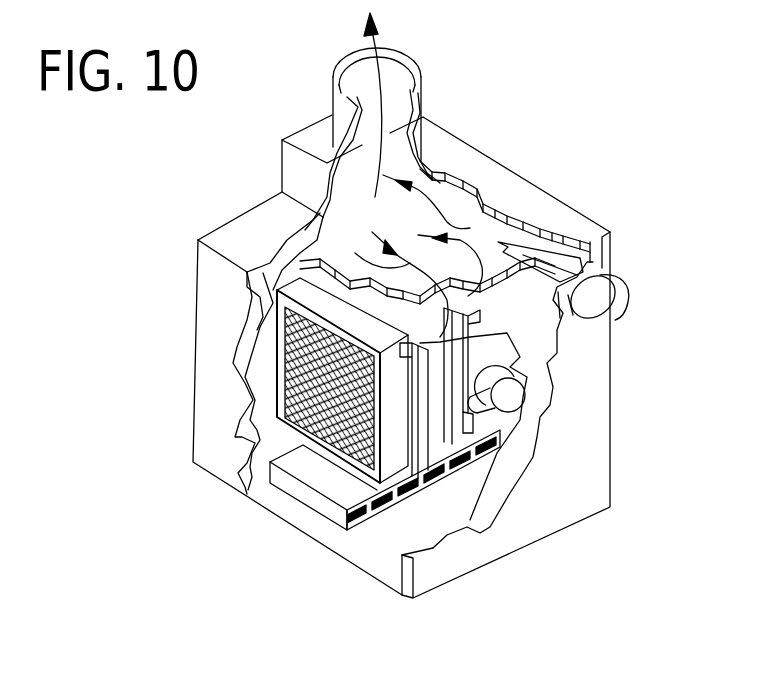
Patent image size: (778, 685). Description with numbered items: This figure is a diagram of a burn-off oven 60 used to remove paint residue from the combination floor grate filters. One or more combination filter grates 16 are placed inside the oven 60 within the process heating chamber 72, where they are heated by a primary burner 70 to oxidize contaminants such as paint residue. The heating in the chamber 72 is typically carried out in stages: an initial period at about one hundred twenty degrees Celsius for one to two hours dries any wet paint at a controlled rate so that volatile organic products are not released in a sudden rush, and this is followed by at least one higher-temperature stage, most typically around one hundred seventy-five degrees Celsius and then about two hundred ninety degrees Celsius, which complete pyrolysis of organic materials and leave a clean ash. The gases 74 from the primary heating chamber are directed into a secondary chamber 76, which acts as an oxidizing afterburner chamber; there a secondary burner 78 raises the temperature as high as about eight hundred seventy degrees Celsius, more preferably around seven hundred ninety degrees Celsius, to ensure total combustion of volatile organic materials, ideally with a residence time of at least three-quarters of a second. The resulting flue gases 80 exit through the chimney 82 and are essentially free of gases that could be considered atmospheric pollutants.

The combination filter grate 16 is at (423, 450).
The oven 60 is at (496, 158).
The primary burner 70 is at (505, 397).
The process heating chamber 72 is at (545, 340).
The gases 74 is at (455, 297).
The secondary chamber 76 is at (353, 203).
The secondary burner 78 is at (625, 280).
The flue gases 80 is at (420, 218).
The chimney 82 is at (421, 62).